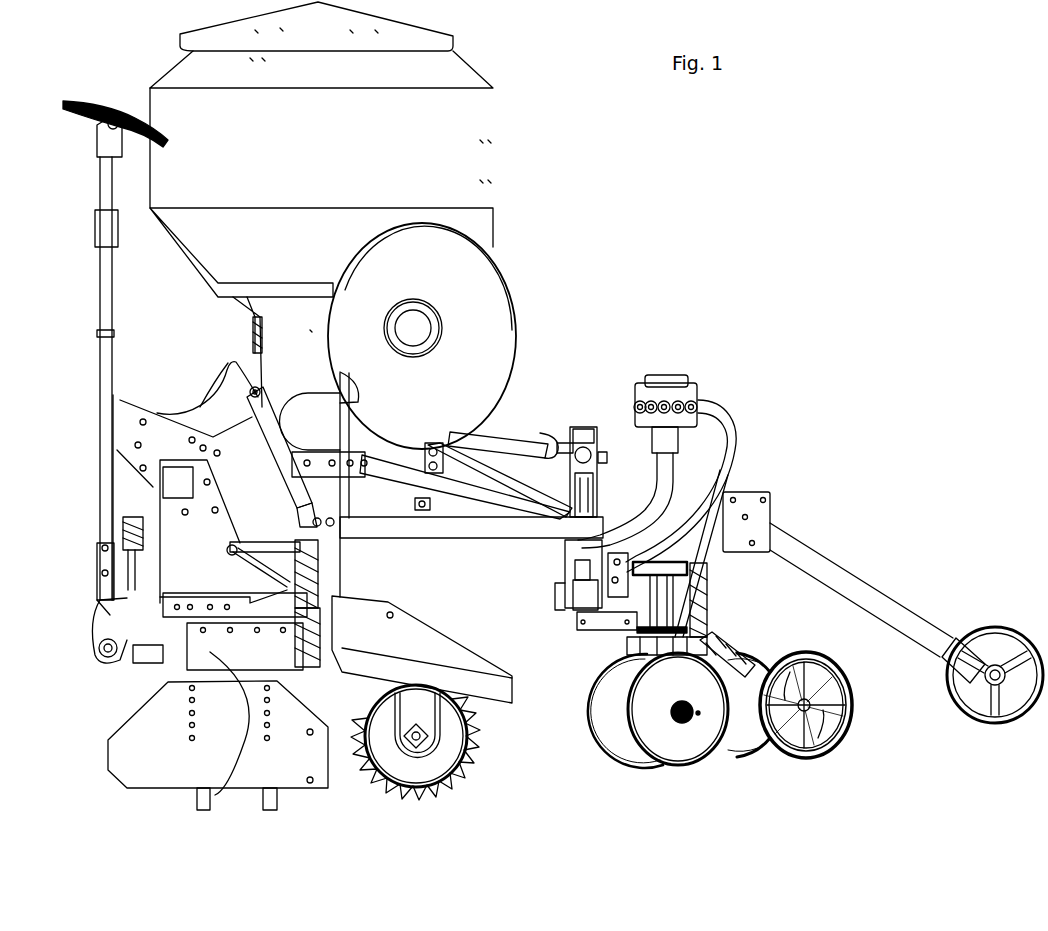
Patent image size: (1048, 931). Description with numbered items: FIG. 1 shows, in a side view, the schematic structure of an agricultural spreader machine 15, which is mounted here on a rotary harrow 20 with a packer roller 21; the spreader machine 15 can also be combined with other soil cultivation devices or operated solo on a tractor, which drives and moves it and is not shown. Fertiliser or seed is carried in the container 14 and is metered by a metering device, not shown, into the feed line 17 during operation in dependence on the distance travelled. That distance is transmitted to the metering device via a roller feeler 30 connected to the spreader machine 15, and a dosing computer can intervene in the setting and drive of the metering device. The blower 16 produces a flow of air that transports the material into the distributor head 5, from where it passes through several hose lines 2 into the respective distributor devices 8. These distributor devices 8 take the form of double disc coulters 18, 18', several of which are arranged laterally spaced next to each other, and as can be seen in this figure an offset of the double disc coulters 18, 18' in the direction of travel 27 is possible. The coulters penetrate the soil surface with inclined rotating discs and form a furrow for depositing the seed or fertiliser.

The container 14 is at (477, 128).
The agricultural spreader machine 15 is at (545, 243).
The blower 16 is at (502, 353).
The feed line 17 is at (457, 528).
The distributor head 5 is at (698, 390).
The hose lines 2 is at (736, 432).
The roller feeler 30 is at (997, 627).
The double disc coulter 18 is at (625, 741).
The double disc coulter 18' is at (678, 740).
The distributor devices 8 is at (727, 757).
The packer roller 21 is at (430, 767).
The rotary harrow 20 is at (218, 795).
The direction of travel 27 is at (257, 845).